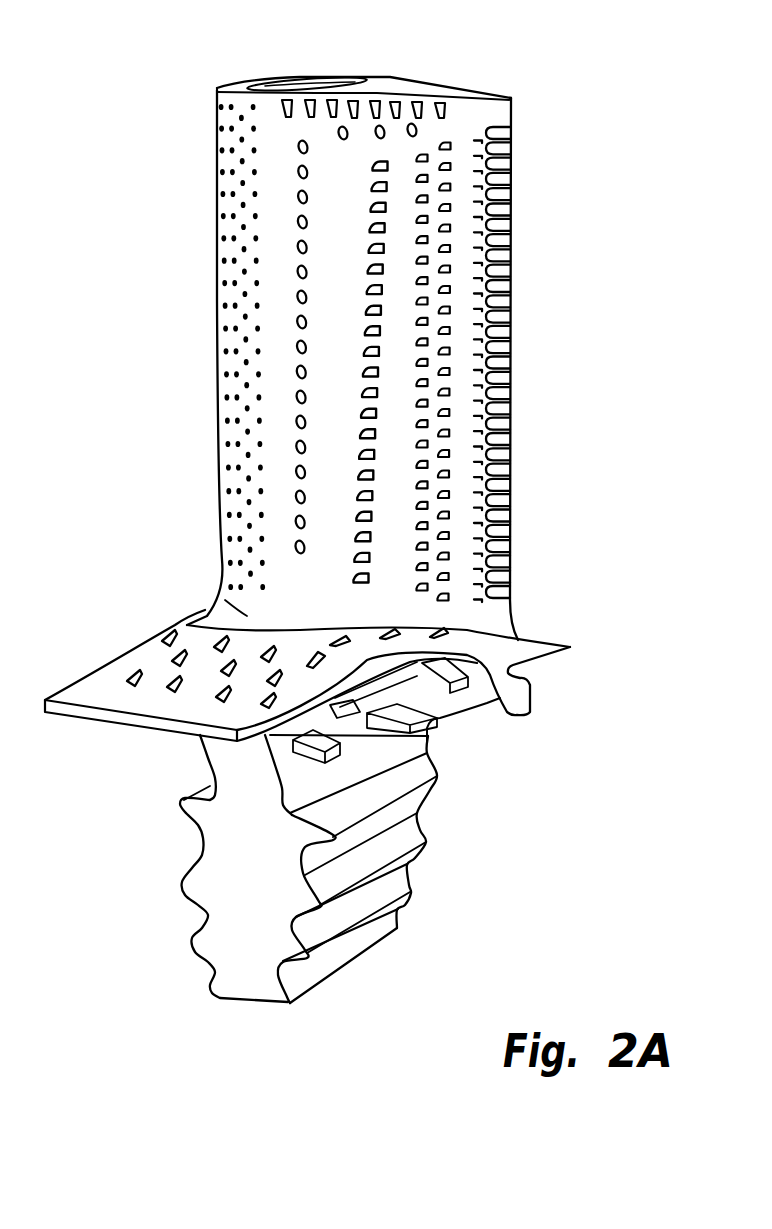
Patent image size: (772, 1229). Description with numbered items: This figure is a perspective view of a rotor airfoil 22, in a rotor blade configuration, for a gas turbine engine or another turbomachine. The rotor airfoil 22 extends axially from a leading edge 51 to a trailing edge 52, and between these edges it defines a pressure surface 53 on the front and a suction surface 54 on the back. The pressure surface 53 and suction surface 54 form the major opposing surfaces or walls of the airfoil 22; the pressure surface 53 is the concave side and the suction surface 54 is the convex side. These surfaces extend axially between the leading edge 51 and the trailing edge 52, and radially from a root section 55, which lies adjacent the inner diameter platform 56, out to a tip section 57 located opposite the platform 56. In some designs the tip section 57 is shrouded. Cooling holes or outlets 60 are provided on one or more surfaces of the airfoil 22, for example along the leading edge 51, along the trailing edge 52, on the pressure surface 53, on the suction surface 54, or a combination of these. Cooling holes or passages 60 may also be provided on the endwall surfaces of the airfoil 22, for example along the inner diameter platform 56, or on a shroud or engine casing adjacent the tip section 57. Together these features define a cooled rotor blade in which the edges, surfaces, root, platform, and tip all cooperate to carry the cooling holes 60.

The rotor airfoil 22 is at (104, 96).
The leading edge 51 is at (216, 250).
The trailing edge 52 is at (512, 372).
The pressure surface 53 is at (336, 382).
The suction surface 54 is at (450, 82).
The root section 55 is at (243, 613).
The inner diameter platform 56 is at (120, 655).
The tip section 57 is at (394, 93).
The cooling holes 60 is at (380, 210).